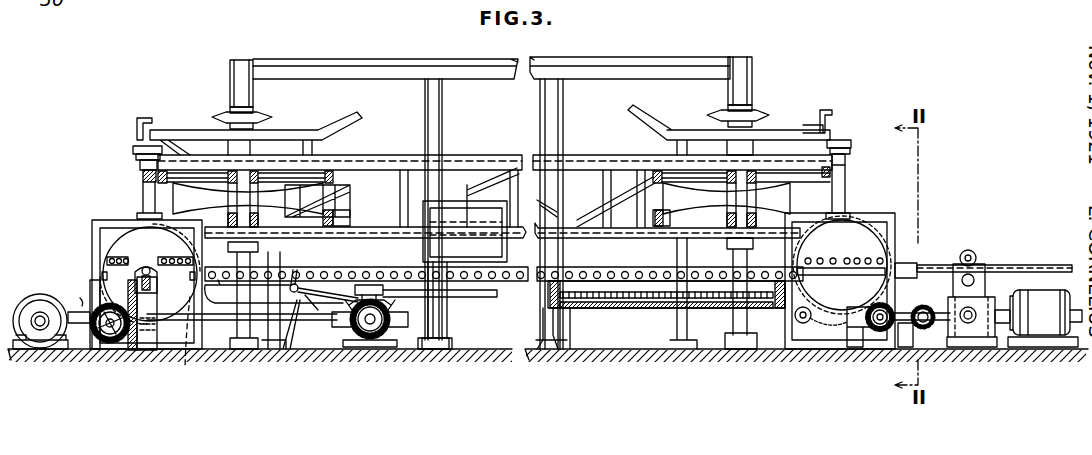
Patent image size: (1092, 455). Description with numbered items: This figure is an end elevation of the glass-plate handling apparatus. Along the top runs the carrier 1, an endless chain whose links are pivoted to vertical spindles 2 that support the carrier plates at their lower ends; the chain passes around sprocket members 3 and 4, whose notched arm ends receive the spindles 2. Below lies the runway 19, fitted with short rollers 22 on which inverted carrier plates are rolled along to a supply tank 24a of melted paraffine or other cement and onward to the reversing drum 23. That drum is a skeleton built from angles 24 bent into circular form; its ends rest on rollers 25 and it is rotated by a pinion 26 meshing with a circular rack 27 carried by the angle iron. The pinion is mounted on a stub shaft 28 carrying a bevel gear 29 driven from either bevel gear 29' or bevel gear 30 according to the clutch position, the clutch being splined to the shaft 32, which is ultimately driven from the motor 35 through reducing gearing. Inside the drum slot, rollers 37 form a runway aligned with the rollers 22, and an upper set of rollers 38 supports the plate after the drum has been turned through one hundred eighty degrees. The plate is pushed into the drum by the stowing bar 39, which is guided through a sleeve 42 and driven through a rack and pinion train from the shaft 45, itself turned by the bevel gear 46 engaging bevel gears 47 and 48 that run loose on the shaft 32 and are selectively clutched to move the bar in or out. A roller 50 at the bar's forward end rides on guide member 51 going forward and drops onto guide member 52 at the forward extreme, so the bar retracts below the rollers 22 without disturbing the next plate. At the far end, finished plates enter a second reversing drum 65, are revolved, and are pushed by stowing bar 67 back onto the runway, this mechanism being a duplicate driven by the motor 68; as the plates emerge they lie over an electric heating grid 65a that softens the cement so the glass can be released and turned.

The carrier 1 is at (132, 151).
The vertical spindles 2 is at (143, 193).
The sprocket member 3 is at (323, 210).
The sprocket member 4 is at (770, 214).
The runway 19 is at (320, 268).
The short rollers 22 is at (584, 270).
The reversing drum 23 is at (118, 245).
The angles 24 is at (115, 228).
The supply tank 24a is at (464, 275).
The rollers 25 is at (147, 338).
The pinion 26 is at (107, 375).
The circular rack 27 is at (103, 222).
The stub shaft 28 is at (89, 335).
The bevel gear 29 is at (87, 299).
The bevel gear 29' is at (75, 302).
The bevel gear 30 is at (128, 345).
The shaft 32 is at (222, 355).
The motor 35 is at (35, 298).
The rollers 37 is at (107, 276).
The rollers 38 is at (128, 248).
The stowing bar 39 is at (492, 298).
The sleeve 42 is at (373, 285).
The shaft 45 is at (376, 340).
The bevel gear 46 is at (387, 359).
The bevel gear 47 is at (360, 340).
The bevel gear 48 is at (396, 340).
The roller 50 is at (300, 355).
The guide member 51 is at (280, 286).
The guide member 52 is at (270, 355).
The reversing drum 65 is at (883, 243).
The electric heating grid 65a is at (645, 270).
The stowing bar 67 is at (1000, 263).
The motor 68 is at (1045, 292).